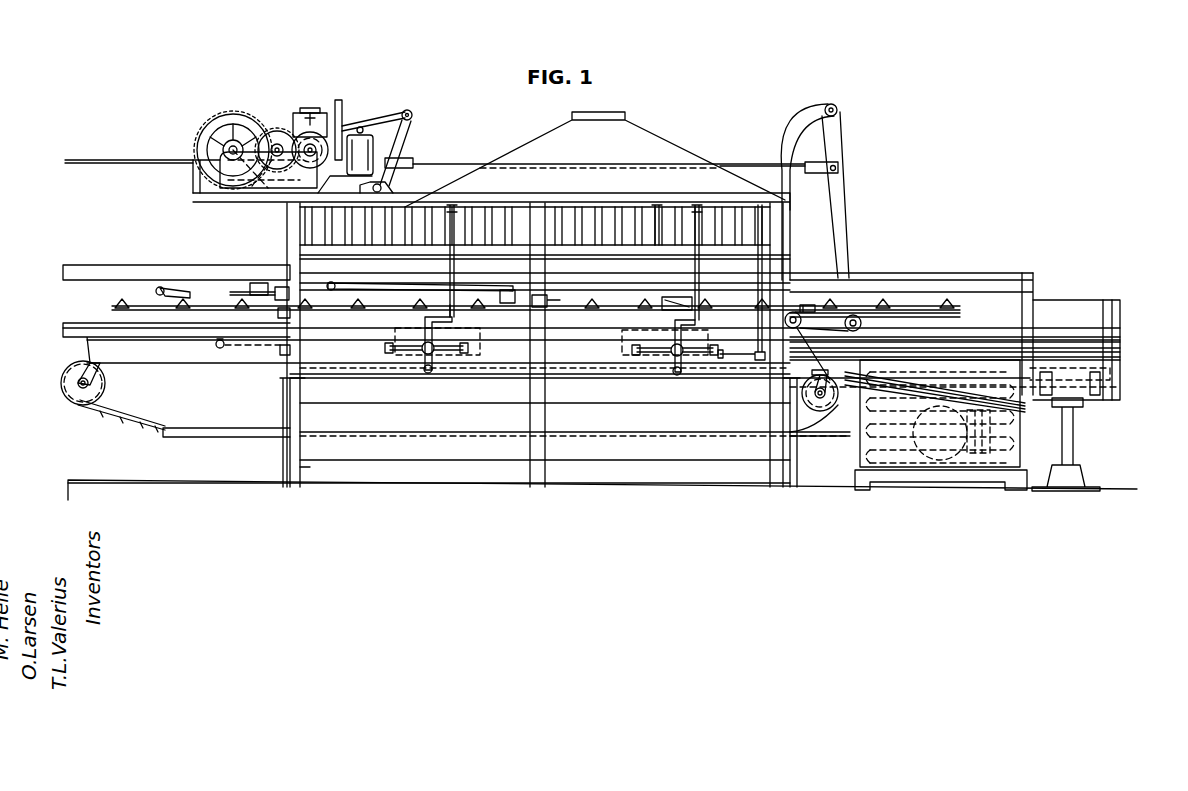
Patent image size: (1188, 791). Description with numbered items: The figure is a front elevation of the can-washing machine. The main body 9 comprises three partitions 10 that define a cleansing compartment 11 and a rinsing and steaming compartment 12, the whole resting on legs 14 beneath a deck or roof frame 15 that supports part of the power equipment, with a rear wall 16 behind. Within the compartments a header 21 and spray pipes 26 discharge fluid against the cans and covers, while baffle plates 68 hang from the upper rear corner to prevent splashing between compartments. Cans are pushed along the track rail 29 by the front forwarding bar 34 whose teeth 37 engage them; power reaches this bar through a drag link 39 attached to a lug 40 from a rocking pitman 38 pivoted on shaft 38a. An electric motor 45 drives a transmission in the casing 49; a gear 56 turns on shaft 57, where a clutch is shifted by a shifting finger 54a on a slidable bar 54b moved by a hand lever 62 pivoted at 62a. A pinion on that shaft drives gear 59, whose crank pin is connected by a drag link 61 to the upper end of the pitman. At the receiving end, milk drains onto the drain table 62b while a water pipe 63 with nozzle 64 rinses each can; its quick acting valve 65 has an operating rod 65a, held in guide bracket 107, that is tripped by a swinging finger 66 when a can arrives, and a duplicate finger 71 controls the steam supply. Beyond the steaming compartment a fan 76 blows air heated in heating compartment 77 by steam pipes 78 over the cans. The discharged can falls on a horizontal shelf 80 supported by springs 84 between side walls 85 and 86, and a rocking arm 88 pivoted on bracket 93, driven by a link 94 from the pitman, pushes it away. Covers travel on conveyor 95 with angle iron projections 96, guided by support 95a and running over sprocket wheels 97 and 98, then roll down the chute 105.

The main body 9 is at (550, 497).
The partition 10 is at (542, 217).
The cleansing compartment 11 is at (415, 512).
The rinsing and steaming compartment 12 is at (660, 501).
The legs 14 is at (305, 467).
The deck or roof frame 15 is at (527, 148).
The rear wall 16 is at (341, 112).
The header 21 is at (482, 345).
The spray pipe 26 is at (387, 347).
The track rail 29 is at (125, 267).
The front forwarding bar 34 is at (498, 305).
The projecting teeth 37 is at (947, 304).
The pitman 38 is at (410, 125).
The pitman shaft 38a is at (384, 184).
The drag link 39 is at (470, 290).
The lug 40 is at (558, 300).
The electric motor 45 is at (393, 113).
The casing 49 is at (310, 117).
The shifting finger 54a is at (283, 148).
The slidable bar 54b is at (300, 163).
The gear 56 is at (270, 122).
The shaft 57 is at (267, 178).
The gear 59 is at (210, 122).
The drag link 61 is at (362, 142).
The hand lever 62 is at (129, 160).
The pivot 62a is at (270, 193).
The drain table 62b is at (176, 343).
The water pipe 63 is at (230, 378).
The nozzle 64 is at (218, 348).
The quick acting valve 65 is at (283, 290).
The operating rod 65a is at (247, 291).
The swinging finger 66 is at (167, 290).
The baffle plates 68 is at (608, 222).
The finger 71 is at (673, 297).
The fan 76 is at (935, 455).
The heating compartment 77 is at (877, 470).
The steam pipes 78 is at (1000, 457).
The horizontal shelf 80 is at (1108, 325).
The springs 84 is at (1107, 360).
The side wall 85 is at (1037, 285).
The side wall 86 is at (1083, 303).
The rocking arm 88 is at (837, 143).
The bracket 93 is at (797, 120).
The link 94 is at (745, 165).
The conveyor 95 is at (150, 420).
The support 95a is at (245, 438).
The angle iron projections 96 is at (147, 422).
The sprocket wheel 97 is at (832, 402).
The sprocket wheel 98 is at (62, 376).
The chute 105 is at (957, 365).
The guide bracket 107 is at (259, 284).